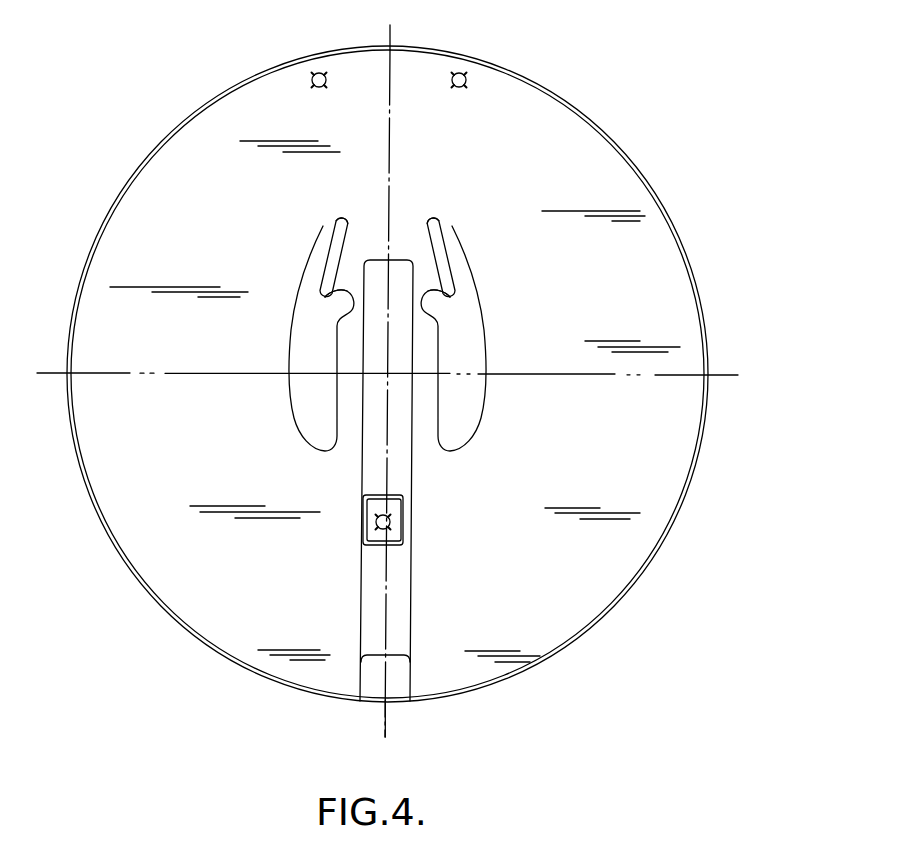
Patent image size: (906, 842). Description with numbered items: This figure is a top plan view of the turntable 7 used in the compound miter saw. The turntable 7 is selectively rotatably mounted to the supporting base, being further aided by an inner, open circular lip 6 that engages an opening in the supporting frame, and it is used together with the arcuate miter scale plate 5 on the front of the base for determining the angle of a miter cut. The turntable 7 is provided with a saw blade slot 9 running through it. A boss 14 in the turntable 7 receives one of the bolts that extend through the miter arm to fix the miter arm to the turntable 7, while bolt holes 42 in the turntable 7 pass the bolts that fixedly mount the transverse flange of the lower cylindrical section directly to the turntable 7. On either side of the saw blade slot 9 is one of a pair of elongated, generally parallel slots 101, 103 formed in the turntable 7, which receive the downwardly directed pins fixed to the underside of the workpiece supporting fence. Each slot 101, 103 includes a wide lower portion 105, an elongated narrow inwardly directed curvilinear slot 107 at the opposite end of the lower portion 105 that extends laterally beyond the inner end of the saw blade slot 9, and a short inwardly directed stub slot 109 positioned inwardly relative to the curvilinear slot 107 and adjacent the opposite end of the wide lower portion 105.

The turntable 7 is at (518, 59).
The bolt holes 42 is at (316, 72).
The saw blade slot 9 is at (412, 455).
The boss 14 is at (391, 519).
The slot 101 is at (487, 359).
The slot 103 is at (290, 352).
The wide lower portion 105 is at (292, 415).
The elongated narrow inwardly directed curvilinear slot 107 is at (331, 232).
The short inwardly directed stub slot 109 is at (418, 232).
The arcuate miter scale plate 5 is at (390, 25).
The inner open circular lip 6 is at (37, 373).